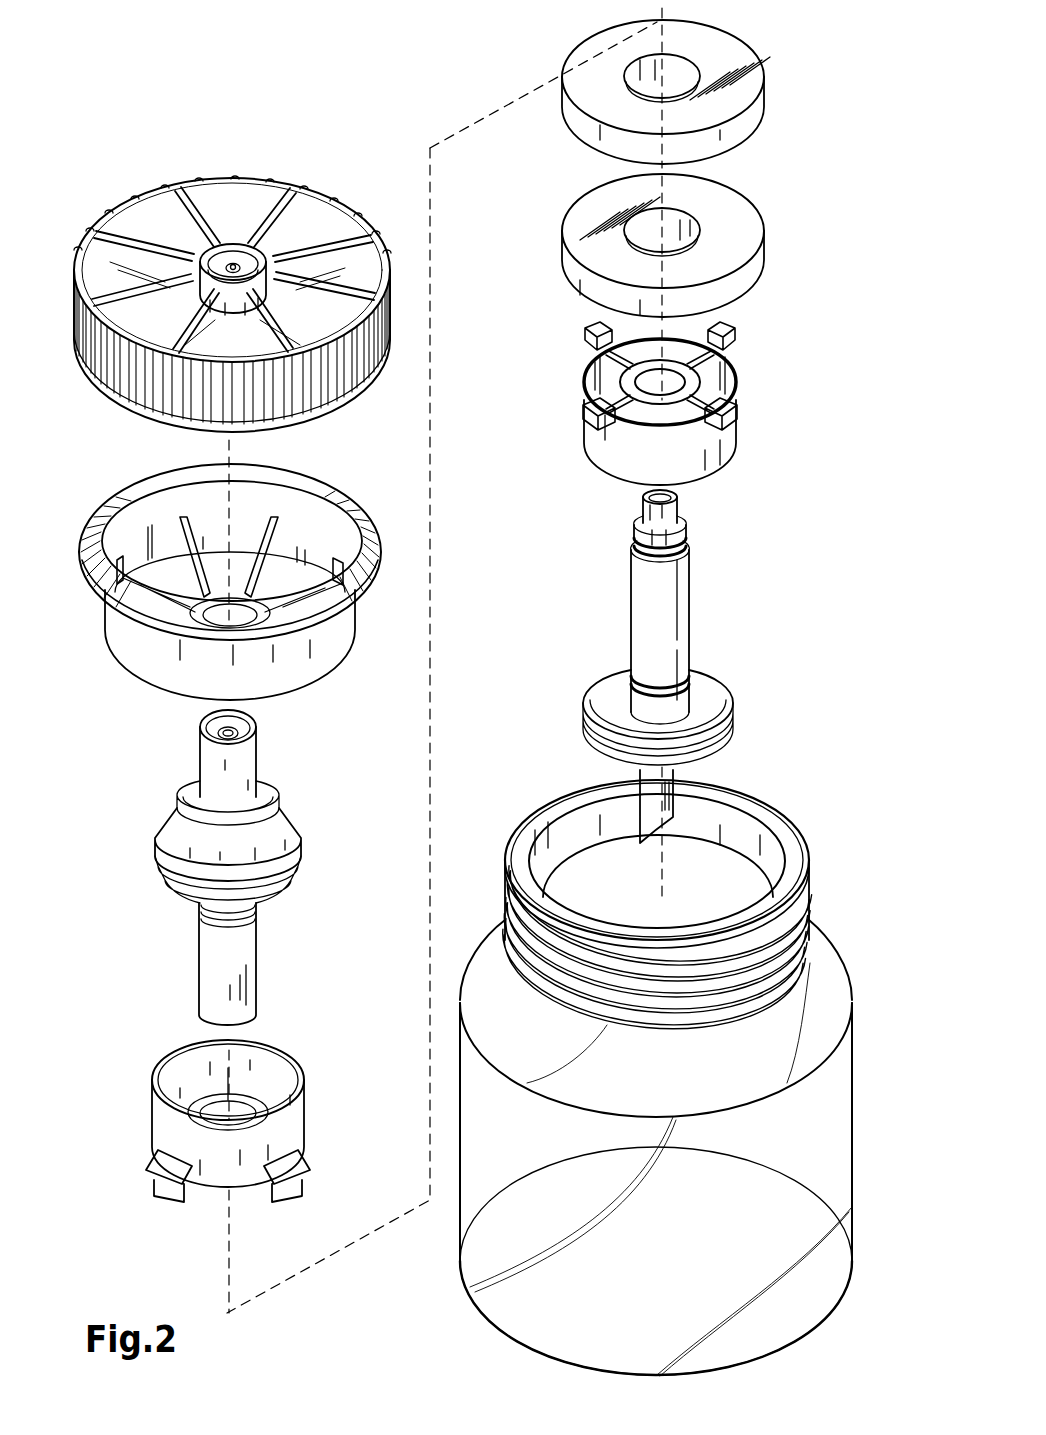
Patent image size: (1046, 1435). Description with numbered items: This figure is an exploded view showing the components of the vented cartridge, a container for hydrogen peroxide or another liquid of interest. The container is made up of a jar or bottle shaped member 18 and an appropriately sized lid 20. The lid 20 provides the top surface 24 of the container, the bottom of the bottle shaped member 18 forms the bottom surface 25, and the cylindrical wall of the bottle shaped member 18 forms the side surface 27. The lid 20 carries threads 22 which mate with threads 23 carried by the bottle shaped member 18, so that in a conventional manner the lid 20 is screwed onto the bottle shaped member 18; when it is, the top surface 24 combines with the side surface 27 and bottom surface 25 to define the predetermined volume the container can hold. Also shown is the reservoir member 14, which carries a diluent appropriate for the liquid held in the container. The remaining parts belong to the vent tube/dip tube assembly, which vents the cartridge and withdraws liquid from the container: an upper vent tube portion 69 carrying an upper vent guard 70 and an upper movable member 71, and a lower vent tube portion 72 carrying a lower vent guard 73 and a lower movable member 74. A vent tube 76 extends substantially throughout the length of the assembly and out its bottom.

The reservoir member 14 is at (327, 645).
The bottle shaped member 18 is at (682, 1086).
The lid 20 is at (216, 271).
The threads 22 is at (75, 300).
The threads 23 is at (800, 922).
The top surface 24 is at (262, 245).
The bottom surface 25 is at (730, 1295).
The side surface 27 is at (853, 1068).
The upper vent tube portion 69 is at (290, 817).
The upper vent guard 70 is at (293, 1120).
The upper movable member 71 is at (757, 67).
The lower vent tube portion 72 is at (703, 693).
The lower vent guard 73 is at (727, 432).
The lower movable member 74 is at (748, 228).
The vent tube 76 is at (700, 802).